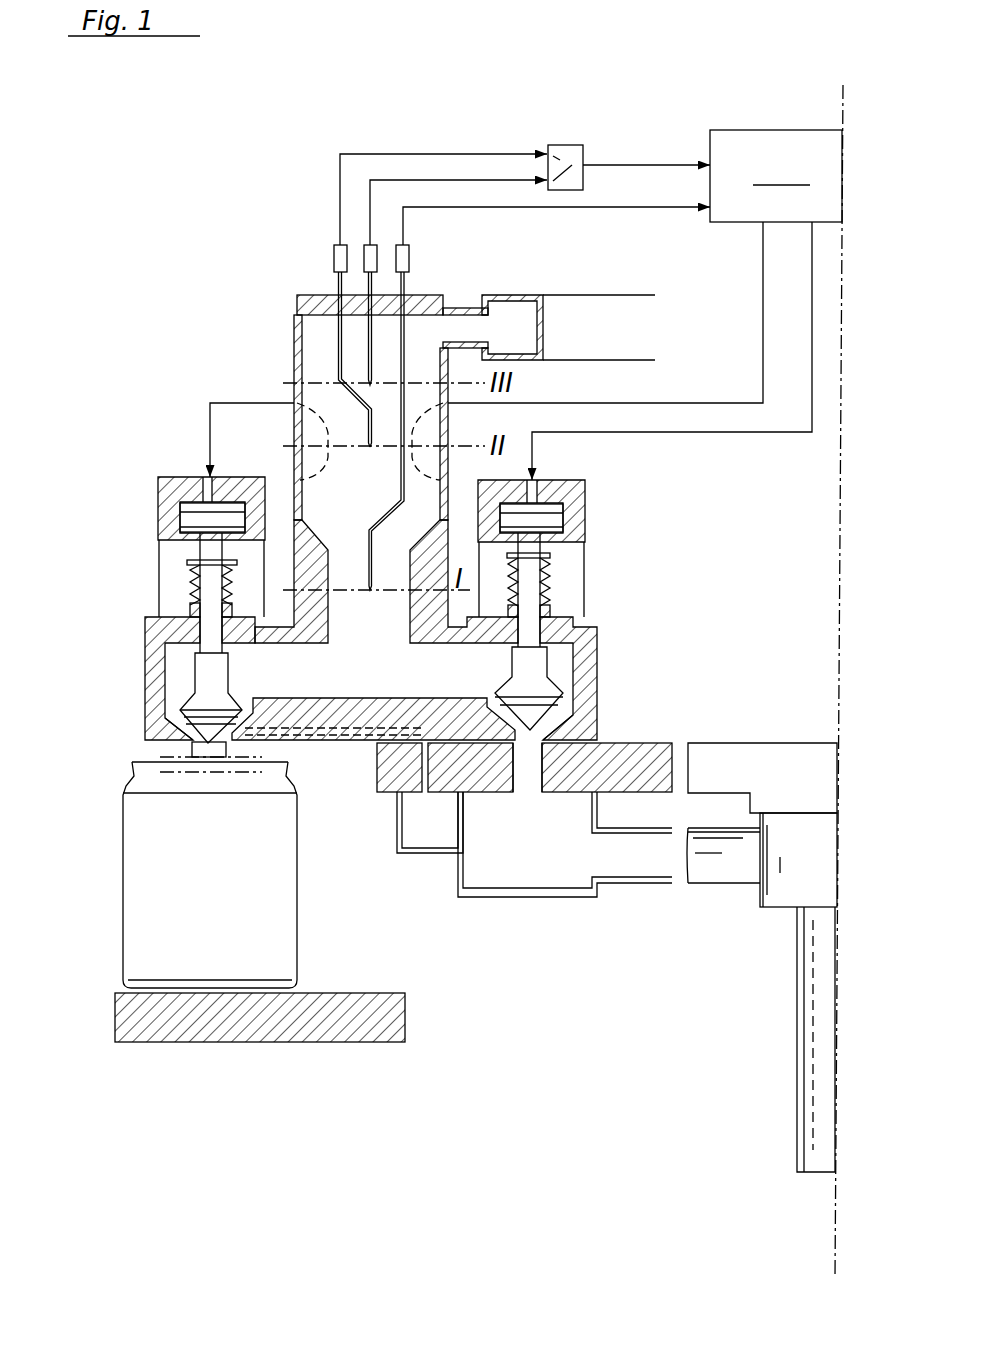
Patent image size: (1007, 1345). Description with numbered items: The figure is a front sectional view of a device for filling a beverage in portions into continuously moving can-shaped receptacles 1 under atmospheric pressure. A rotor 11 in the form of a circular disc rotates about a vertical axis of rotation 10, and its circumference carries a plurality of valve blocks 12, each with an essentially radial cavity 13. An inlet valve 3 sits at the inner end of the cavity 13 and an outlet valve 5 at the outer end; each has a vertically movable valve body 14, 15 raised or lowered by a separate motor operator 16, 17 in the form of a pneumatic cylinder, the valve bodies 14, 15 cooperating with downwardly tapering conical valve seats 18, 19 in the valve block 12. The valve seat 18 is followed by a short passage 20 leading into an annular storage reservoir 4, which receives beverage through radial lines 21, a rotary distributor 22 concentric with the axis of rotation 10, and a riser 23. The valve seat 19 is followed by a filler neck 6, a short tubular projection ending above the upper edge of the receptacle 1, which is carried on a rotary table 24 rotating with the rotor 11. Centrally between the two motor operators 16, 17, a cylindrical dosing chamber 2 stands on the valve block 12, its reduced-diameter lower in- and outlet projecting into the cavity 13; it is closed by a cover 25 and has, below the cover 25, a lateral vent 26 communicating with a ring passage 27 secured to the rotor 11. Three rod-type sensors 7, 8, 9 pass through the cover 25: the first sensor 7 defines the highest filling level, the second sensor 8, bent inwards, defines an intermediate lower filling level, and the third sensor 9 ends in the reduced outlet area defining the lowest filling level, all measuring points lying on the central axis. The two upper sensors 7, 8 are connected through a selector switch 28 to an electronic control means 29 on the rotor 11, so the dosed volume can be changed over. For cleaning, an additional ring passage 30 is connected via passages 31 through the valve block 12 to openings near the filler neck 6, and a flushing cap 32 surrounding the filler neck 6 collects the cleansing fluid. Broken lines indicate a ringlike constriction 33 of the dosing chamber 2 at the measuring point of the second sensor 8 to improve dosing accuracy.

The receptacle 1 is at (158, 908).
The dosing chamber 2 is at (300, 427).
The inlet valve 3 is at (563, 677).
The storage reservoir 4 is at (568, 863).
The outlet valve 5 is at (180, 688).
The filler neck 6 is at (170, 742).
The first sensor 7 is at (370, 337).
The second sensor 8 is at (340, 365).
The third sensor 9 is at (408, 335).
The axis of rotation 10 is at (844, 100).
The rotor 11 is at (750, 770).
The valve block 12 is at (160, 632).
The cavity 13 is at (388, 677).
The valve body 14 is at (592, 693).
The valve body 15 is at (202, 715).
The motor operator 16 is at (573, 521).
The motor operator 17 is at (158, 506).
The valve seat 18 is at (597, 713).
The valve seat 19 is at (195, 745).
The passage 20 is at (525, 770).
The radial line 21 is at (723, 862).
The rotary distributor 22 is at (787, 888).
The riser 23 is at (810, 1123).
The rotary table 24 is at (233, 1020).
The cover 25 is at (330, 306).
The lateral vent 26 is at (455, 328).
The ring passage 27 is at (523, 320).
The selector switch 28 is at (570, 155).
The electronic control means 29 is at (526, 305).
The ring passage 30 is at (432, 830).
The passage 31 is at (350, 742).
The flushing cap 32 is at (160, 785).
The constriction 33 is at (320, 425).